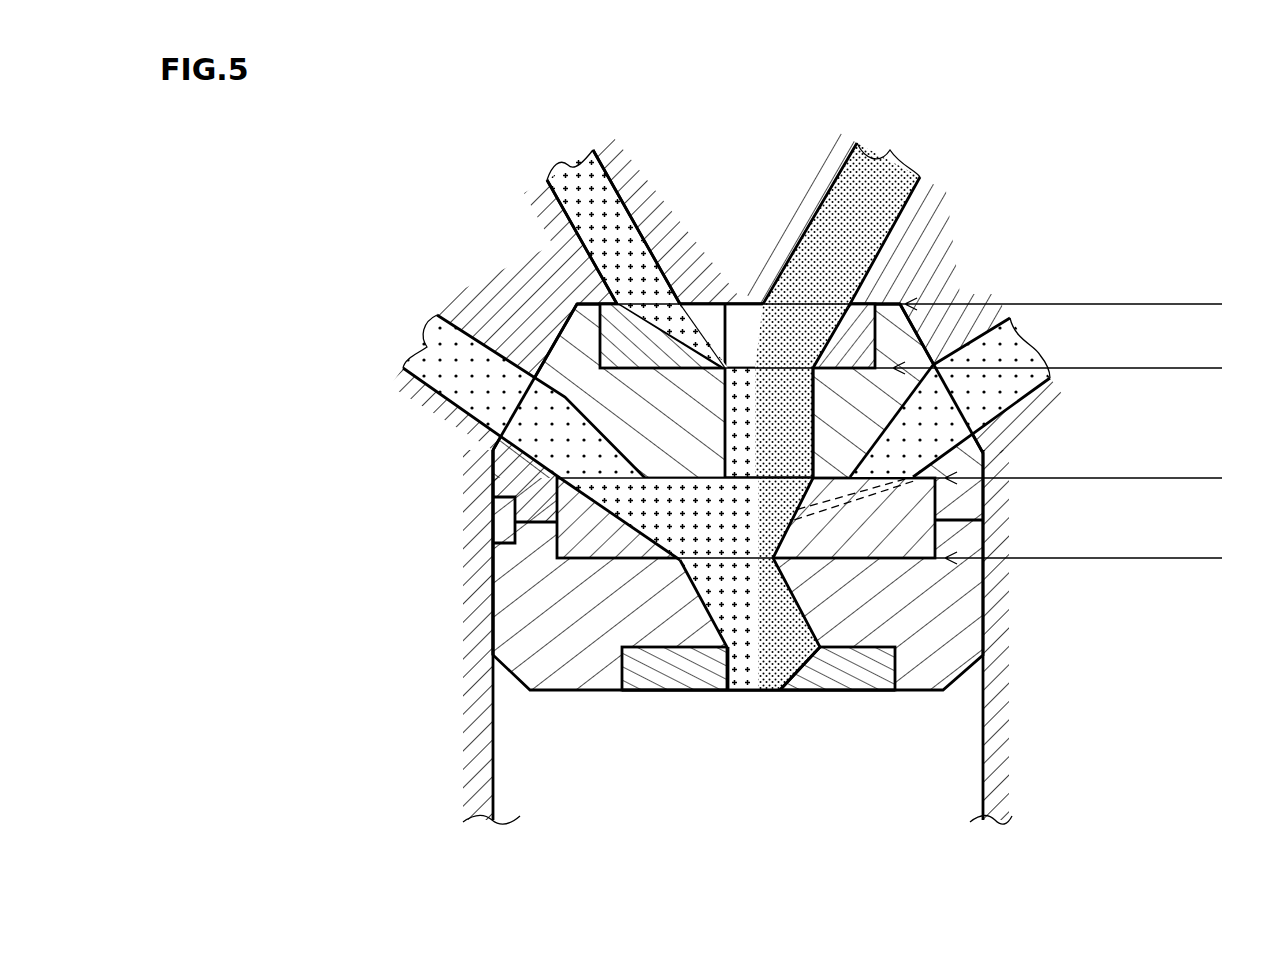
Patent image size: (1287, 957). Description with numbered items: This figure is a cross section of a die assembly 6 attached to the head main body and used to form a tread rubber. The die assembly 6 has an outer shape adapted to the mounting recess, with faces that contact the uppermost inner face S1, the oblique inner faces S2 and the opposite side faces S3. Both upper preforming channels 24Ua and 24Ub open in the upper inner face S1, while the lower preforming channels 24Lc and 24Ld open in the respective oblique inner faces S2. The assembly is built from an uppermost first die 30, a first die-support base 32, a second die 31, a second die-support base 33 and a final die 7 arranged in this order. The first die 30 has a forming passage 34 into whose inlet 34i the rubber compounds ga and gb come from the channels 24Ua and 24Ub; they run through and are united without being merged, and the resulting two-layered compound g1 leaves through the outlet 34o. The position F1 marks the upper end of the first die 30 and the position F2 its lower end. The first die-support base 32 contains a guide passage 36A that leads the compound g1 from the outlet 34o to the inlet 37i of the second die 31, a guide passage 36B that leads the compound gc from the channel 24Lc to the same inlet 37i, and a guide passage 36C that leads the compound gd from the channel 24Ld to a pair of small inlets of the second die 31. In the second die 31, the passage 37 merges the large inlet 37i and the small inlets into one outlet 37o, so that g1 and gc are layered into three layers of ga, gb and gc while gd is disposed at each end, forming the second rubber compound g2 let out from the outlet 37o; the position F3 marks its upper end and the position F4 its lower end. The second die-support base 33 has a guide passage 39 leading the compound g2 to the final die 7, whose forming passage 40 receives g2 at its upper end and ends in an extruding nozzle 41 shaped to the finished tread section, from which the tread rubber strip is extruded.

The die assembly 6 is at (496, 662).
The final die 7 is at (880, 673).
The first die 30 is at (905, 330).
The second die 31 is at (913, 507).
The first die-support base 32 is at (950, 300).
The second die-support base 33 is at (945, 628).
The forming passage 34 is at (737, 336).
The inlet 34i is at (703, 295).
The outlet 34o is at (753, 368).
The second die passage 37 is at (746, 519).
The inlet 37i is at (719, 432).
The outlet 37o is at (713, 560).
The guide passage 39 is at (727, 620).
The forming passage 40 is at (797, 670).
The nozzle 41 is at (737, 692).
The upper preforming channel 24Ua is at (913, 177).
The upper preforming channel 24Ub is at (585, 185).
The lower preforming channel 24Lc is at (430, 318).
The lower preforming channel 24Ld is at (1005, 400).
The rubber compound ga is at (860, 187).
The rubber compound gb is at (557, 173).
The rubber compound gc is at (437, 363).
The rubber compound gd is at (1010, 352).
The two-layered compound g1 is at (773, 417).
The second rubber compound g2 is at (745, 635).
The guide passage 36A is at (705, 461).
The guide passage 36B is at (455, 413).
The guide passage 36C is at (940, 475).
The upper inner face S1 is at (740, 350).
The oblique inner face S2 is at (552, 358).
The side face S3 is at (495, 568).
The position of the upper end of the first die F1 is at (917, 305).
The position of the lower end of the first die F2 is at (928, 370).
The position of the upper end of the second die F3 is at (907, 480).
The position of the lower end of the second die F4 is at (907, 560).